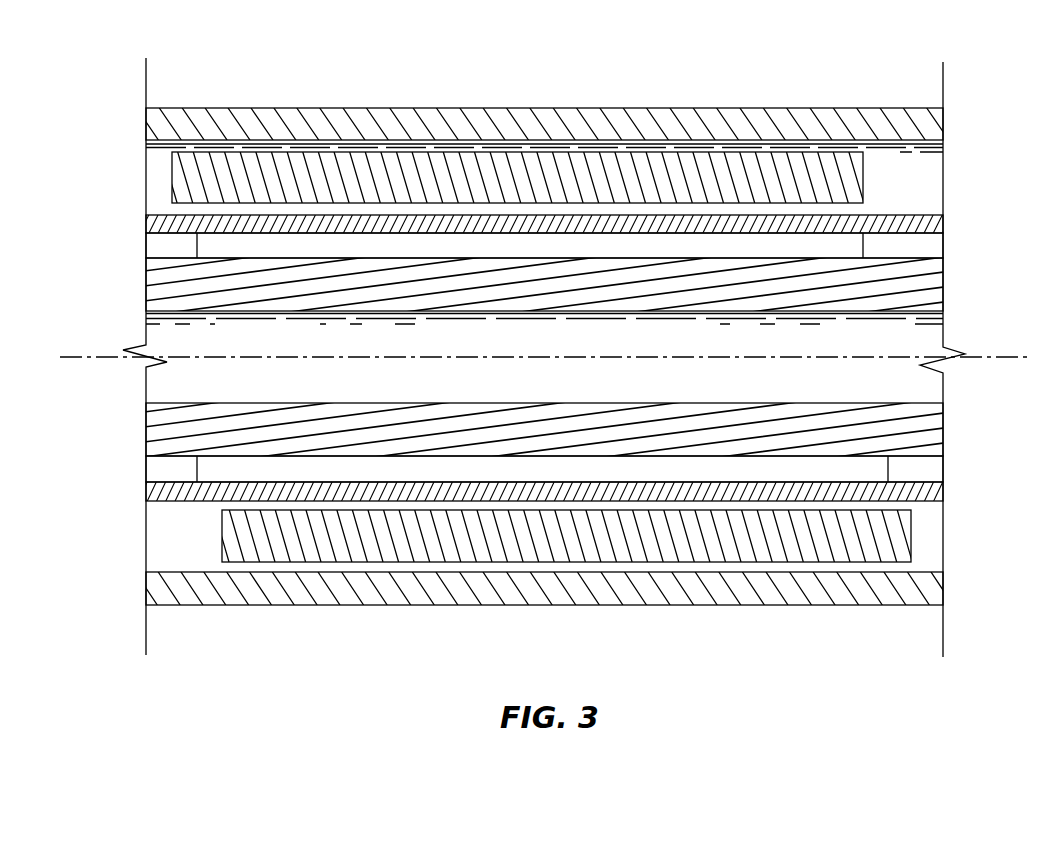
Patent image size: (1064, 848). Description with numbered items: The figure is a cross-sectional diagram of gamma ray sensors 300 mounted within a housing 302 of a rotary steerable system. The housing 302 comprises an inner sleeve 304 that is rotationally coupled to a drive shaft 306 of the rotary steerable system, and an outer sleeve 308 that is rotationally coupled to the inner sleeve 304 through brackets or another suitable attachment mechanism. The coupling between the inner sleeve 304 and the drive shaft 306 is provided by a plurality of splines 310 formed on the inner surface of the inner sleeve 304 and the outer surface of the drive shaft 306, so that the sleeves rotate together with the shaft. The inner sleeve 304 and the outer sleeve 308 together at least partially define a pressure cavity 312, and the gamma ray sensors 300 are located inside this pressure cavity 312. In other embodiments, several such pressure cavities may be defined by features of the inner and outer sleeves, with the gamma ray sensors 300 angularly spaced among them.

The gamma ray sensors 300 is at (695, 160).
The housing 302 is at (309, 104).
The inner sleeve 304 is at (152, 490).
The drive shaft 306 is at (158, 433).
The outer sleeve 308 is at (309, 590).
The splines 310 is at (858, 474).
The pressure cavity 312 is at (178, 180).